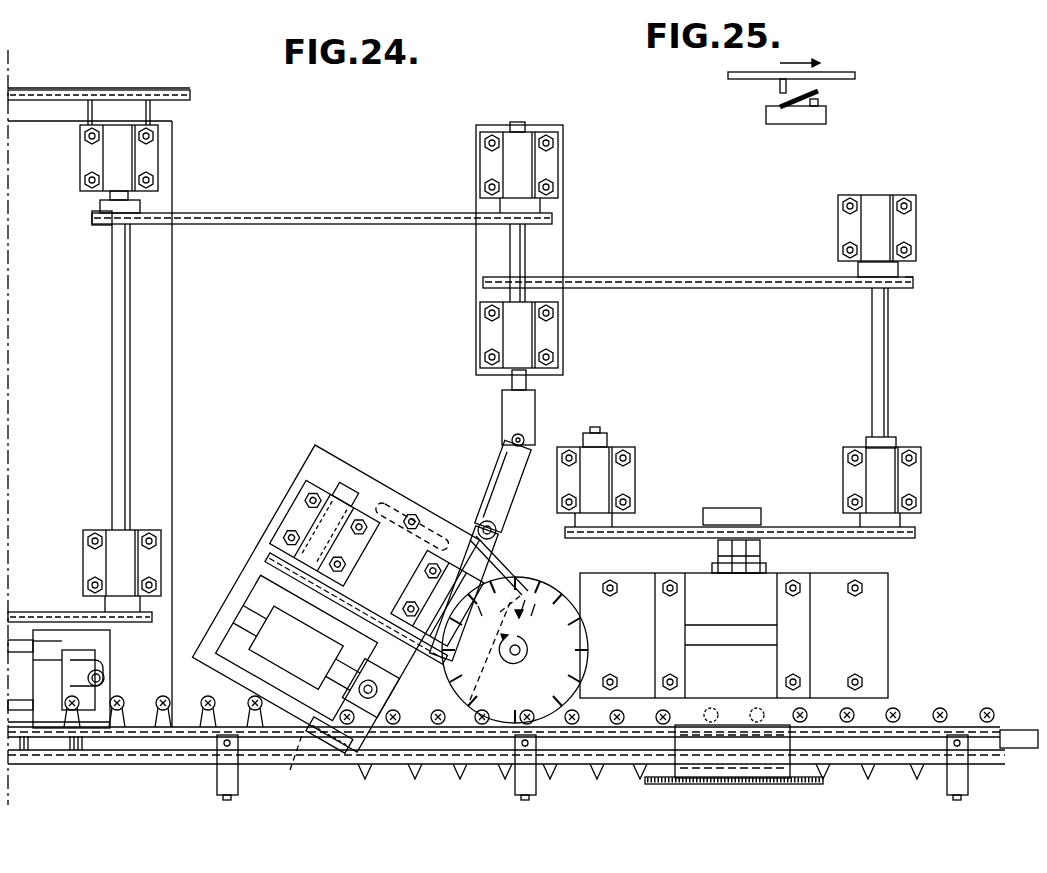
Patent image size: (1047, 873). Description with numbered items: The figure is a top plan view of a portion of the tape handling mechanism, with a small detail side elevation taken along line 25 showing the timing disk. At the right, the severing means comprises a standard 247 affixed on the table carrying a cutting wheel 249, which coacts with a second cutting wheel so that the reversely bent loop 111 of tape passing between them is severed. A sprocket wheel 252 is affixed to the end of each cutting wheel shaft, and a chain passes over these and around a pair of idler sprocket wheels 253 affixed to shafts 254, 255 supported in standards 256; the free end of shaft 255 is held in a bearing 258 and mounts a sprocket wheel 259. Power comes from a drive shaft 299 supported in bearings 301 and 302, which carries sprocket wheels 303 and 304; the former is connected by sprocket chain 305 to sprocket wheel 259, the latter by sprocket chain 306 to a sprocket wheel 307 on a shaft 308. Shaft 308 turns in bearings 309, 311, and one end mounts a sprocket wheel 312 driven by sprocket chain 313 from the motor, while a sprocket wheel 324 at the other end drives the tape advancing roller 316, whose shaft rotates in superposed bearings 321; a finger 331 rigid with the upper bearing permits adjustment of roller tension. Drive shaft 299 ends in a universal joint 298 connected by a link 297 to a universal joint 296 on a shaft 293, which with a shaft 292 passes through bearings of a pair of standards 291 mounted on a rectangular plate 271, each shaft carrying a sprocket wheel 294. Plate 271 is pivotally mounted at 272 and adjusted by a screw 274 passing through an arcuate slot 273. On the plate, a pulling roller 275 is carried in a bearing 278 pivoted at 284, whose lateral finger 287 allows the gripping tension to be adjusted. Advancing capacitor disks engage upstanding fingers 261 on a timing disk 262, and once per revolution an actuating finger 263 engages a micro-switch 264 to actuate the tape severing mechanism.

In FIG. 24, the sprocket chain 313 is at (62, 90).
In FIG. 24, the sprocket wheel 312 is at (185, 90).
In FIG. 24, the bearing 309 is at (120, 150).
In FIG. 24, the sprocket chain 306 is at (297, 213).
In FIG. 24, the sprocket wheel 307 is at (96, 228).
In FIG. 24, the shaft 308 is at (115, 313).
In FIG. 24, the bearing 311 is at (108, 552).
In FIG. 24, the bearings 321 is at (47, 630).
In FIG. 24, the sprocket wheel 324 is at (104, 663).
In FIG. 24, the finger 331 is at (105, 678).
In FIG. 24, the roller 316 is at (67, 745).
In FIG. 24, the reversely bent loop 111 is at (915, 782).
In FIG. 24, the cutting wheel 249 is at (745, 784).
In FIG. 24, the pivot 272 is at (288, 773).
In FIG. 24, the standard 247 is at (755, 595).
In FIG. 24, the sprocket wheel 252 is at (675, 527).
In FIG. 24, the idler sprocket wheels 253 is at (625, 527).
In FIG. 24, the standards 256 is at (622, 455).
In FIG. 24, the shaft 254 is at (600, 432).
In FIG. 24, the shaft 255 is at (873, 373).
In FIG. 24, the bearing 258 is at (890, 228).
In FIG. 24, the sprocket chain 305 is at (700, 277).
In FIG. 24, the sprocket wheel 259 is at (910, 289).
In FIG. 24, the sprocket wheel 303 is at (482, 281).
In FIG. 24, the bearing 302 is at (512, 160).
In FIG. 24, the sprocket wheel 304 is at (498, 225).
In FIG. 24, the bearing 301 is at (512, 335).
In FIG. 24, the drive shaft 299 is at (530, 386).
In FIG. 24, the universal joint 298 is at (532, 432).
In FIG. 24, the link 297 is at (502, 480).
In FIG. 24, the universal joint 296 is at (478, 525).
In FIG. 24, the shaft 293 is at (495, 565).
In FIG. 24, the timing disk 262 is at (582, 638).
In FIG. 25, the timing disk 262 is at (848, 74).
In FIG. 24, the upstanding fingers 261 is at (576, 665).
In FIG. 24, the line 25— 25 is at (516, 625).
In FIG. 24, the rectangular plate 271 is at (306, 581).
In FIG. 24, the shaft 292 is at (345, 498).
In FIG. 24, the standards 291 is at (379, 512).
In FIG. 24, the arcuate slot 273 is at (417, 492).
In FIG. 24, the screw 274 is at (421, 497).
In FIG. 24, the sprocket wheel 294 is at (328, 580).
In FIG. 24, the pivot 284 is at (269, 628).
In FIG. 24, the bearing 278 is at (396, 687).
In FIG. 24, the finger 287 is at (400, 698).
In FIG. 24, the pulling roller 275 is at (336, 770).
In FIG. 25, the actuating finger 263 is at (778, 88).
In FIG. 25, the micro-switch 264 is at (810, 126).